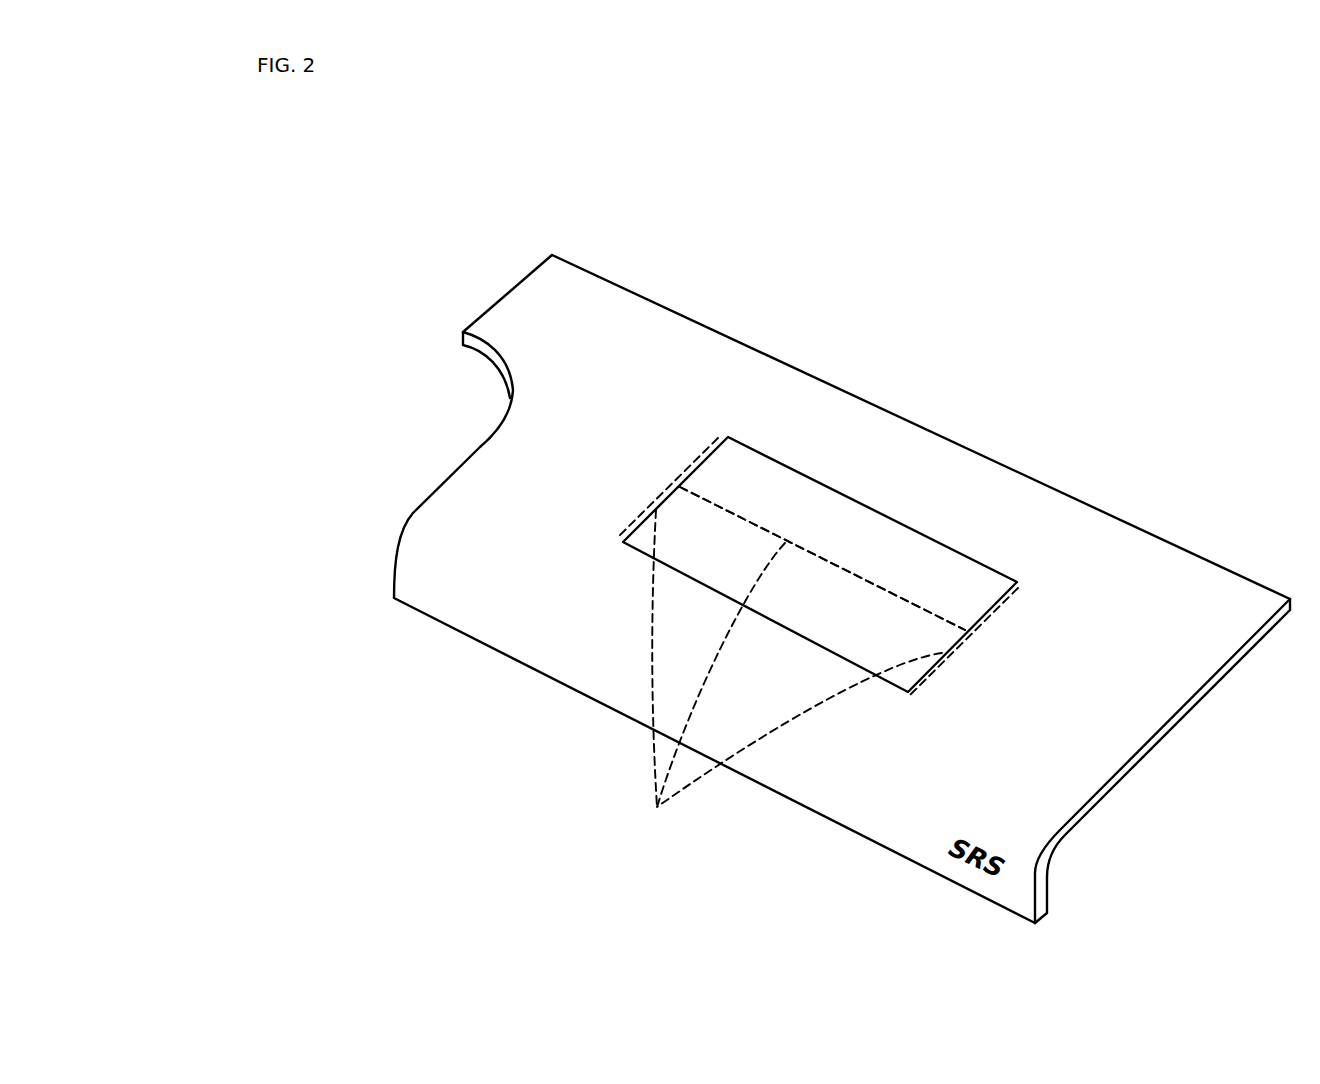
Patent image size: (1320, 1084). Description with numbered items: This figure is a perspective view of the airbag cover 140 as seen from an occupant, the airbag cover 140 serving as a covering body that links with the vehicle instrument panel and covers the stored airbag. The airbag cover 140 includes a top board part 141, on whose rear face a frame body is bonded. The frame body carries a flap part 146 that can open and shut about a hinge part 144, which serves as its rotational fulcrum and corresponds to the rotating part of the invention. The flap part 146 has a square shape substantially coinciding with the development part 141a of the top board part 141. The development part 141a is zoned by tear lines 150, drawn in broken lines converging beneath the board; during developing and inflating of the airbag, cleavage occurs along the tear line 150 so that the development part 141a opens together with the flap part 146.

The airbag cover 140 is at (1097, 448).
The top board part 141 is at (633, 318).
The development part 141a is at (872, 538).
The flap part 146 is at (872, 538).
The hinge part 144 is at (773, 458).
The tear line 150 is at (785, 676).